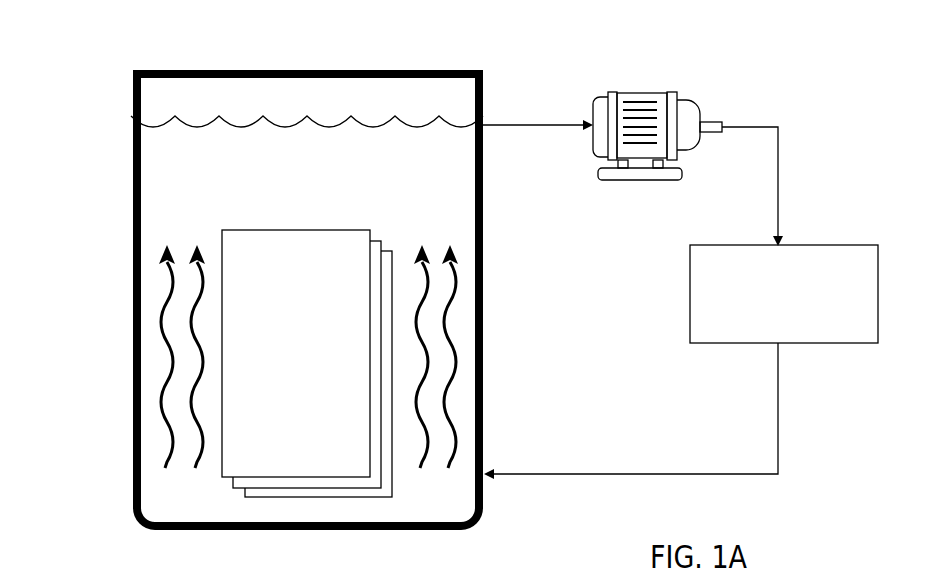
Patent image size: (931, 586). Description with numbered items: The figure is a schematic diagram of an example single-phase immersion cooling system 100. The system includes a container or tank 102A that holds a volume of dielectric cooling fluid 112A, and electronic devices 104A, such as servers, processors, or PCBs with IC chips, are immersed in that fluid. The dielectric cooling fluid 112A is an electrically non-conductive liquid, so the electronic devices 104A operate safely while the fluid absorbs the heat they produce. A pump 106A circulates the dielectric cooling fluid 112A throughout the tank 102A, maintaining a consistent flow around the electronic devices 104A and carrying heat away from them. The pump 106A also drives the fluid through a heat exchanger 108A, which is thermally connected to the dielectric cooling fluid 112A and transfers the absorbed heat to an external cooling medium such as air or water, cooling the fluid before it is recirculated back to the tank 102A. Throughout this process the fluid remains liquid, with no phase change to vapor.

The single-phase immersion cooling system 100 is at (108, 48).
The tank 102A is at (243, 70).
The electronic devices 104A is at (274, 390).
The pump 106A is at (646, 118).
The heat exchanger 108A is at (758, 333).
The dielectric cooling fluid 112A is at (258, 195).